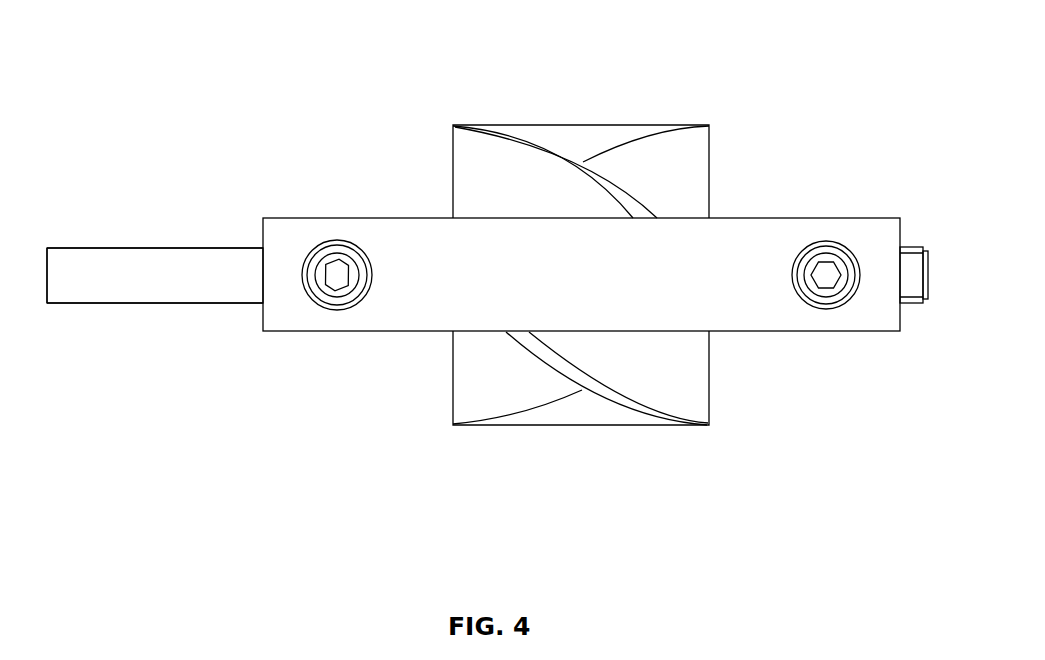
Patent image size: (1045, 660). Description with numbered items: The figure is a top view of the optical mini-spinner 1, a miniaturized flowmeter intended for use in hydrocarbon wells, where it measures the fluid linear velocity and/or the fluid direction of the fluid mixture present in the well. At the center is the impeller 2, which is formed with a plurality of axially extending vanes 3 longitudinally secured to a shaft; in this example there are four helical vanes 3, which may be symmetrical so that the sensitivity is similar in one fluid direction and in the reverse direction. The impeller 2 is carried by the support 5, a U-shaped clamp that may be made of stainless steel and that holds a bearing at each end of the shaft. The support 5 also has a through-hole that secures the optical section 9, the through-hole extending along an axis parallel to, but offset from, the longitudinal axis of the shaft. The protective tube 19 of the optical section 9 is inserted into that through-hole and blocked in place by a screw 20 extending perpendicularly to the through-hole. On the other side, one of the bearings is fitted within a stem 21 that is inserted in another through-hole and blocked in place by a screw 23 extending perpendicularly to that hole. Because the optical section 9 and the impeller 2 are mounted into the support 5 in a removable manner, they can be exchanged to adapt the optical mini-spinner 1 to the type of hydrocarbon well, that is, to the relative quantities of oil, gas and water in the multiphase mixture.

The optical mini-spinner 1 is at (201, 106).
The impeller 2 is at (641, 432).
The vanes 3 is at (473, 147).
The support 5 is at (737, 206).
The optical section 9 is at (126, 312).
The protective tube 19 is at (84, 257).
The screw 20 is at (337, 272).
The stem 21 is at (918, 286).
The screw 23 is at (826, 278).